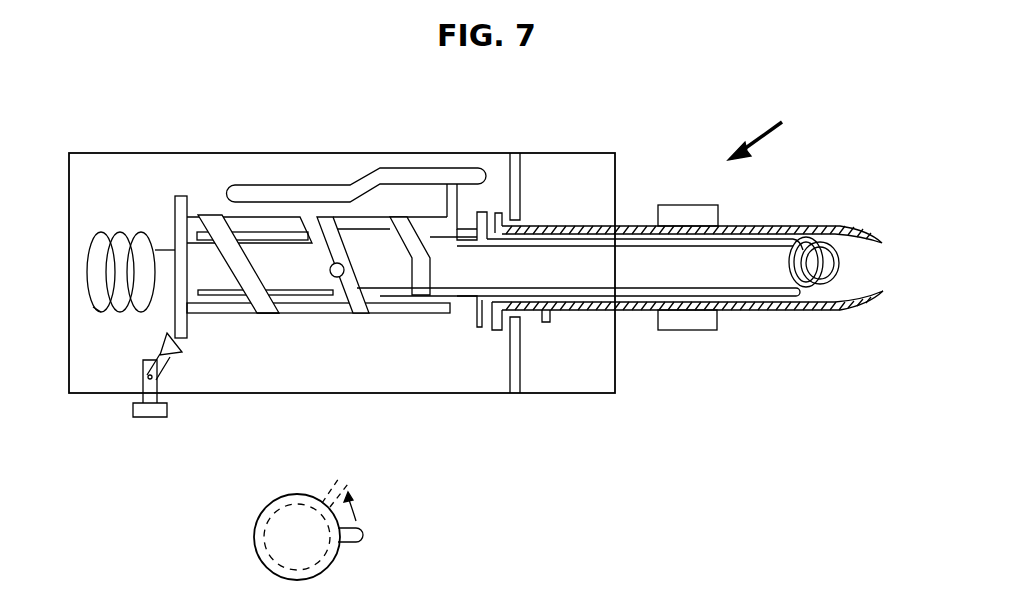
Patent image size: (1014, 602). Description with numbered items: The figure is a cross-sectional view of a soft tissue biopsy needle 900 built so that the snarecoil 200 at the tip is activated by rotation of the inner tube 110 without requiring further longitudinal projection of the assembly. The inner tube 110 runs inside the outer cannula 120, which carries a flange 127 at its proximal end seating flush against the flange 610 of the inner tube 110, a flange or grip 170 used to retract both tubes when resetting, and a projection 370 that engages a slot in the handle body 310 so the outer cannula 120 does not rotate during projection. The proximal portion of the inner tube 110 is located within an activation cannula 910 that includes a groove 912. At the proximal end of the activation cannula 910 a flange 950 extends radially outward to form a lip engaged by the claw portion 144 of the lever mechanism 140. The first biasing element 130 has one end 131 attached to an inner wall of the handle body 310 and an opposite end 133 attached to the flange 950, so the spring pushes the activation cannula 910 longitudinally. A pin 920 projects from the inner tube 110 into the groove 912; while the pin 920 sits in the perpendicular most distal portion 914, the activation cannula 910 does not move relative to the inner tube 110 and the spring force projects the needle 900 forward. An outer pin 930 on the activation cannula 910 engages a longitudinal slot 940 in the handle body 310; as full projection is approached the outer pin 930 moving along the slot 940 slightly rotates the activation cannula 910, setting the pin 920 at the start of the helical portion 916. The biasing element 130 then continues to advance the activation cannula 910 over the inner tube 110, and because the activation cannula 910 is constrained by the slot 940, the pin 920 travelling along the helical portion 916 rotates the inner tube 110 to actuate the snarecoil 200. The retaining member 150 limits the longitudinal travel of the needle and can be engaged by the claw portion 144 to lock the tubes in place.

The inner tube 110 is at (771, 295).
The outer cannula 120 is at (765, 226).
The flange 127 is at (500, 213).
The first biasing element 130 is at (122, 237).
The end 131 is at (94, 306).
The opposite end 133 is at (175, 243).
The lever mechanism 140 is at (153, 413).
The claw portion 144 is at (182, 352).
The retaining member 150 is at (515, 182).
The flange or grip 170 is at (696, 324).
The snarecoil 200 is at (815, 240).
The handle body 310 is at (247, 153).
The projection 370 is at (546, 322).
The flange 610 is at (487, 212).
The soft tissue biopsy needle 900 is at (778, 129).
The activation cannula 910 is at (407, 314).
The groove 912 is at (262, 313).
The most distal portion 914 is at (420, 270).
The helical portion 916 is at (223, 222).
The pin 920 is at (348, 302).
The outer pin 930 is at (447, 186).
The slot 940 is at (343, 186).
The flange 950 is at (180, 196).